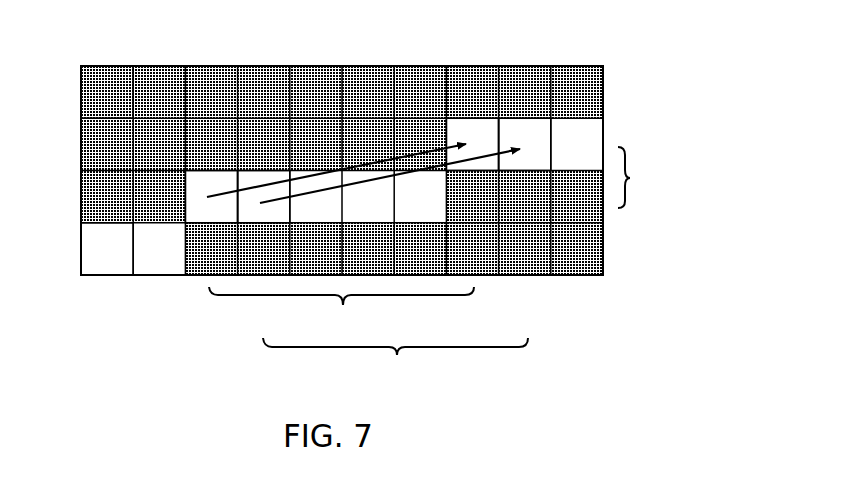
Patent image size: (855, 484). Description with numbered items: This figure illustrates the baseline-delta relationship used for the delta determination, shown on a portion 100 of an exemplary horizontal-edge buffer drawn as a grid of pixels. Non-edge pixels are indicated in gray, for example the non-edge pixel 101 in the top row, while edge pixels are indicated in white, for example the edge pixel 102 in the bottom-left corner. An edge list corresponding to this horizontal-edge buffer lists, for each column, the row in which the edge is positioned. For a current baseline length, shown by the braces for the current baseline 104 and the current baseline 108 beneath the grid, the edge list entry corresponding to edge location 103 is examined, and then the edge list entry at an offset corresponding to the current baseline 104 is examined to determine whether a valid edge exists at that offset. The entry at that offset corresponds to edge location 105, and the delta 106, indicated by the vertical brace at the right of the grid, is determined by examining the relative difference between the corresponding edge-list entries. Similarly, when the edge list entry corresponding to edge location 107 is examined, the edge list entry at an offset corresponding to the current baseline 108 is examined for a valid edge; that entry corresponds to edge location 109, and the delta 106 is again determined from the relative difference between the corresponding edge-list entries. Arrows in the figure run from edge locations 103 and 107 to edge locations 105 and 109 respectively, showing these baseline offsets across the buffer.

The portion of horizontal-edge buffer 100 is at (636, 32).
The non-edge pixel 101 is at (80, 103).
The edge pixel 102 is at (85, 257).
The edge location 103 is at (195, 192).
The current baseline 104 is at (252, 298).
The edge location 105 is at (478, 143).
The delta 106 is at (630, 160).
The edge location 107 is at (268, 212).
The current baseline 108 is at (306, 350).
The edge location 109 is at (537, 142).